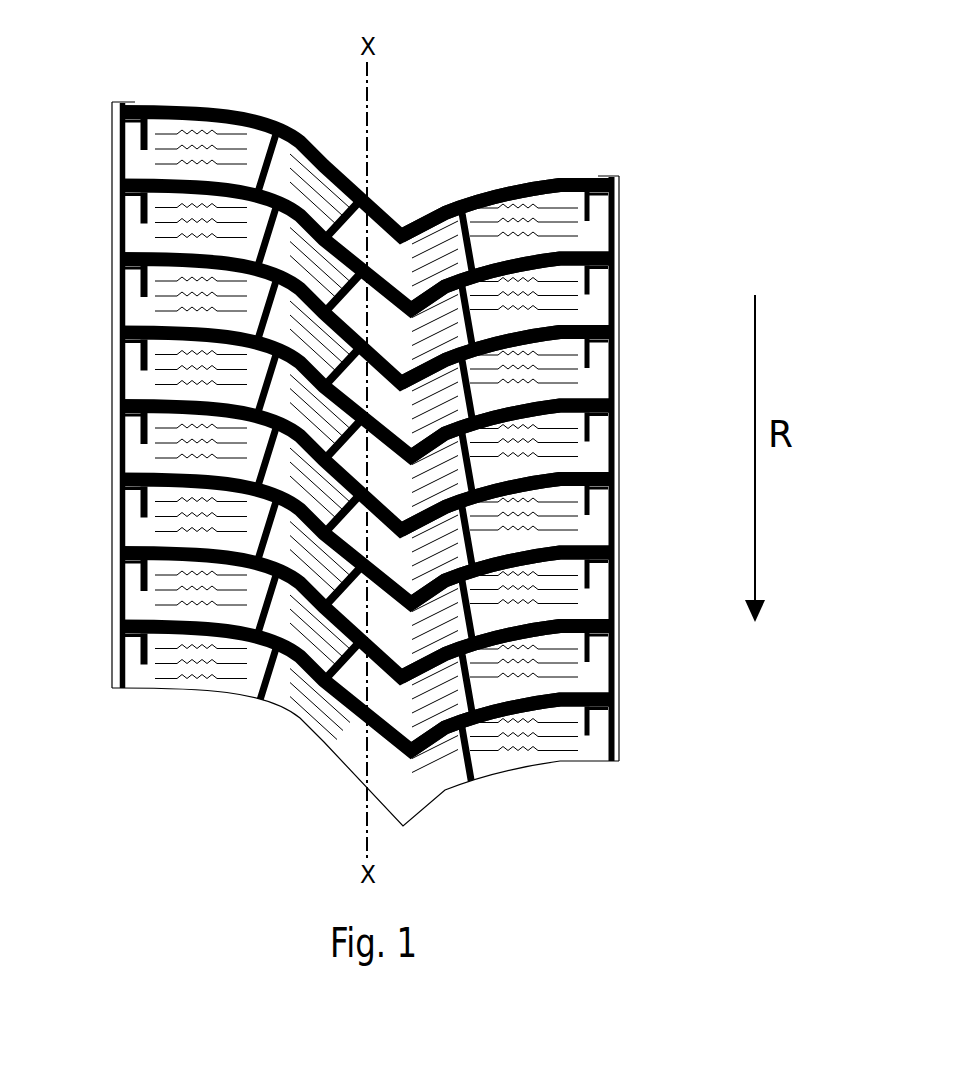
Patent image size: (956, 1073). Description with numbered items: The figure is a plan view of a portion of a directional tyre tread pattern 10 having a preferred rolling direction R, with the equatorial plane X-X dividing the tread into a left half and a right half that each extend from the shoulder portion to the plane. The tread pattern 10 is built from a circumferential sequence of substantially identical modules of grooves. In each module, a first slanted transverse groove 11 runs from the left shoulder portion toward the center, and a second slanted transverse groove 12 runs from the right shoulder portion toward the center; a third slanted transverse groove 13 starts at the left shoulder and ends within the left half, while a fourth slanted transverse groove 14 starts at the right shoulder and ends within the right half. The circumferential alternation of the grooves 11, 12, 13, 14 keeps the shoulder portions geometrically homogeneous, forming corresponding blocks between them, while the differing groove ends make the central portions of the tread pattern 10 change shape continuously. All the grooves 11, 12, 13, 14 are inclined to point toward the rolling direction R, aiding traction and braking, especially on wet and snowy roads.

The tread pattern 10 is at (652, 71).
The first slanted transverse groove 11 is at (168, 103).
The second slanted transverse groove 12 is at (578, 175).
The third slanted transverse groove 13 is at (168, 177).
The fourth slanted transverse groove 14 is at (578, 249).